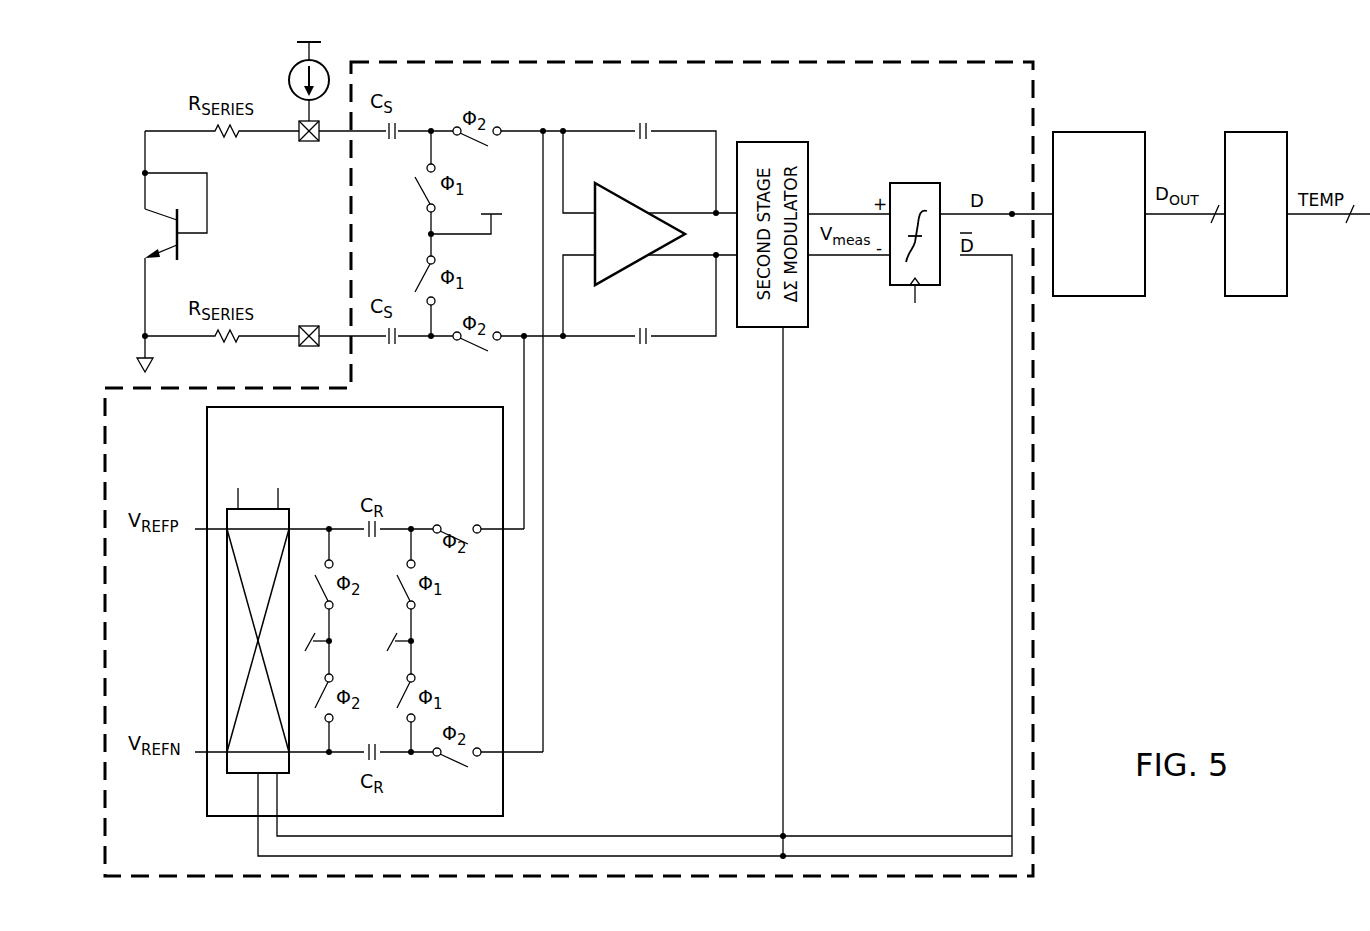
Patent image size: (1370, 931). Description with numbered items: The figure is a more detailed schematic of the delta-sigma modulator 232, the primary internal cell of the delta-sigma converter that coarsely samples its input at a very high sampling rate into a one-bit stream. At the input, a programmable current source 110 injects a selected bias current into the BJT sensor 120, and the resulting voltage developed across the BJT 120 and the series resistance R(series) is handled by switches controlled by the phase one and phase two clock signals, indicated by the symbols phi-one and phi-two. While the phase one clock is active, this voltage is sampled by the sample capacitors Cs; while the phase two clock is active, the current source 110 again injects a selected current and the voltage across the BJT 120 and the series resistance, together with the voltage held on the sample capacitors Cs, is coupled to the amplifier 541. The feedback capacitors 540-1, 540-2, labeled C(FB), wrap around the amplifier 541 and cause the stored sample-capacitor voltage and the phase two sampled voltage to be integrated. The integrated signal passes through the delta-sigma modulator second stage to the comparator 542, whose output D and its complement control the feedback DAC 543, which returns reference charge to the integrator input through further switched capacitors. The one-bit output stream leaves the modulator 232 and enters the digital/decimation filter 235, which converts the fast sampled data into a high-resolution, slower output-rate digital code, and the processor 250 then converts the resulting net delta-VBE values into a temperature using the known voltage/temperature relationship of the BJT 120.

The programmable current source 110 is at (290, 82).
The BJT sensor 120 is at (183, 250).
The delta-sigma modulator 232 is at (1033, 625).
The digital/decimation filter 235 is at (1099, 132).
The processor 250 is at (1258, 132).
The feedback capacitor 540-1 is at (645, 142).
The feedback capacitor 540-2 is at (643, 346).
The amplifier 541 is at (640, 262).
The comparator 542 is at (932, 183).
The feedback DAC 543 is at (207, 478).